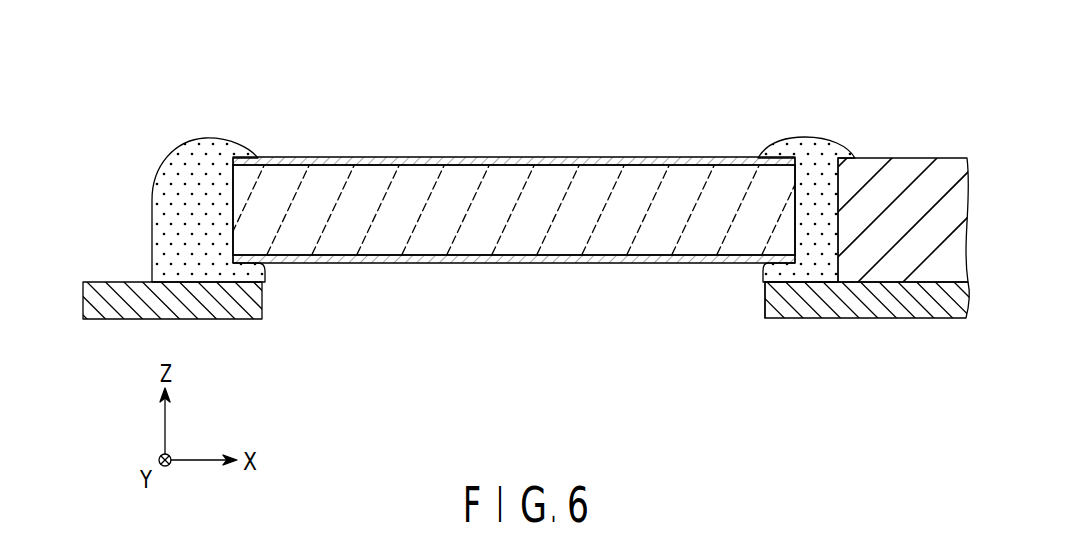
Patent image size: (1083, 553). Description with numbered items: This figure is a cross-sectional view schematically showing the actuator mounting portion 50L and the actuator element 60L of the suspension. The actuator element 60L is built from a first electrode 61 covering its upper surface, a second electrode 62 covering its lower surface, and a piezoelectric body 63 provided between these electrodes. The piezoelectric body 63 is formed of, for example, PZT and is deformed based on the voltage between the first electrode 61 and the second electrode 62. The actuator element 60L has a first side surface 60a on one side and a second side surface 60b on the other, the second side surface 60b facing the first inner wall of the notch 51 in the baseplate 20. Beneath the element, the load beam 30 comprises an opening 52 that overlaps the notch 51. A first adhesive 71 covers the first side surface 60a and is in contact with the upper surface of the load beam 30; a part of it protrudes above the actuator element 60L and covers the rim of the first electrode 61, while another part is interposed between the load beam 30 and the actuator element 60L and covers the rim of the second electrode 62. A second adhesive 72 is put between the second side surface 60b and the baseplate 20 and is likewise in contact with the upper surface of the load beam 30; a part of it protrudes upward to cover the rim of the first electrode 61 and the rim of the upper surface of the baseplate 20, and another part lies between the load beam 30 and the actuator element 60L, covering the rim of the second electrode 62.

The actuator mounting portion 50L is at (286, 98).
The actuator element 60L is at (495, 146).
The first side surface 60a is at (228, 178).
The second side surface 60b is at (800, 175).
The first electrode 61 is at (598, 157).
The second electrode 62 is at (598, 264).
The piezoelectric body 63 is at (643, 180).
The first adhesive 71 is at (165, 168).
The second adhesive 72 is at (838, 150).
The baseplate 20 is at (917, 165).
The load beam 30 is at (930, 312).
The notch 51 is at (822, 277).
The opening 52 is at (765, 300).